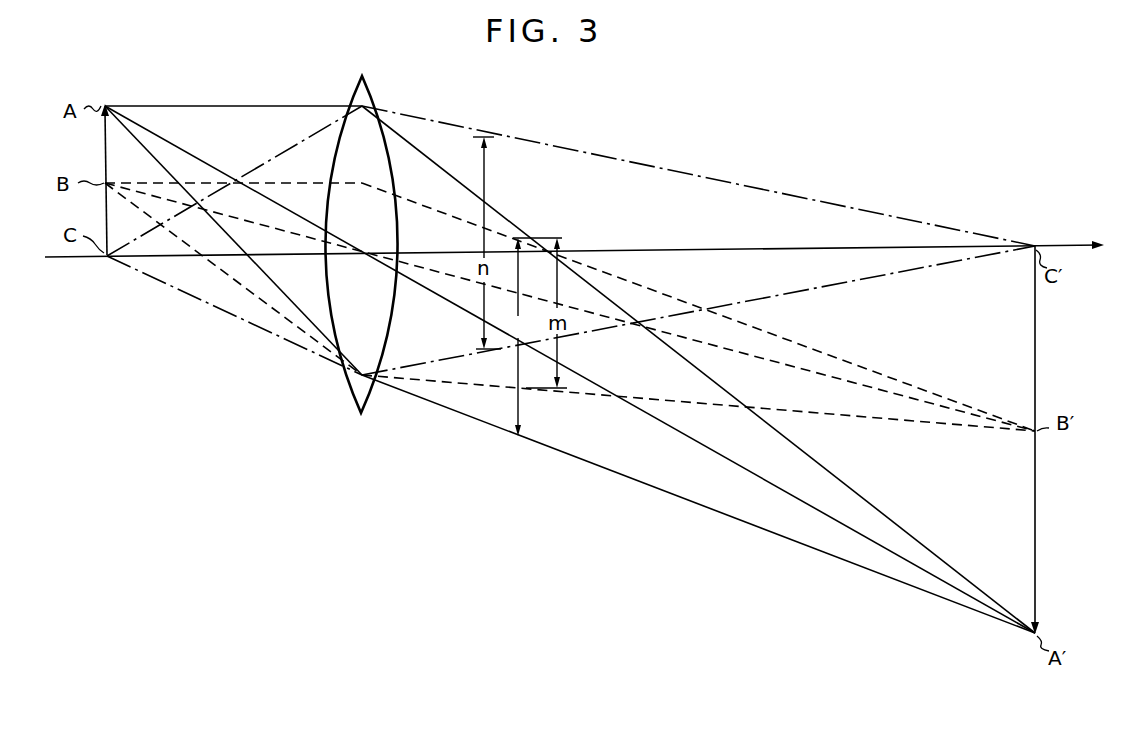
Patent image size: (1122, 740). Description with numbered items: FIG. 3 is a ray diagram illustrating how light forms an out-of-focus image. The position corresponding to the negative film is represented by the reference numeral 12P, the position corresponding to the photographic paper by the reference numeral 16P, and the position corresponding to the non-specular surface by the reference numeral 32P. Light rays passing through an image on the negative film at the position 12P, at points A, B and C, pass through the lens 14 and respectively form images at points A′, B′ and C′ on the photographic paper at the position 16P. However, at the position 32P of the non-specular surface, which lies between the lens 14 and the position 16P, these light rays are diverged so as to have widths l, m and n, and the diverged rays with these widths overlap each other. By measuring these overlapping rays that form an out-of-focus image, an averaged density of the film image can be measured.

The position of negative film 12P is at (109, 258).
The lens 14 is at (374, 382).
The position of photographic paper 16P is at (1034, 244).
The position of non-specular surface 32P is at (517, 251).